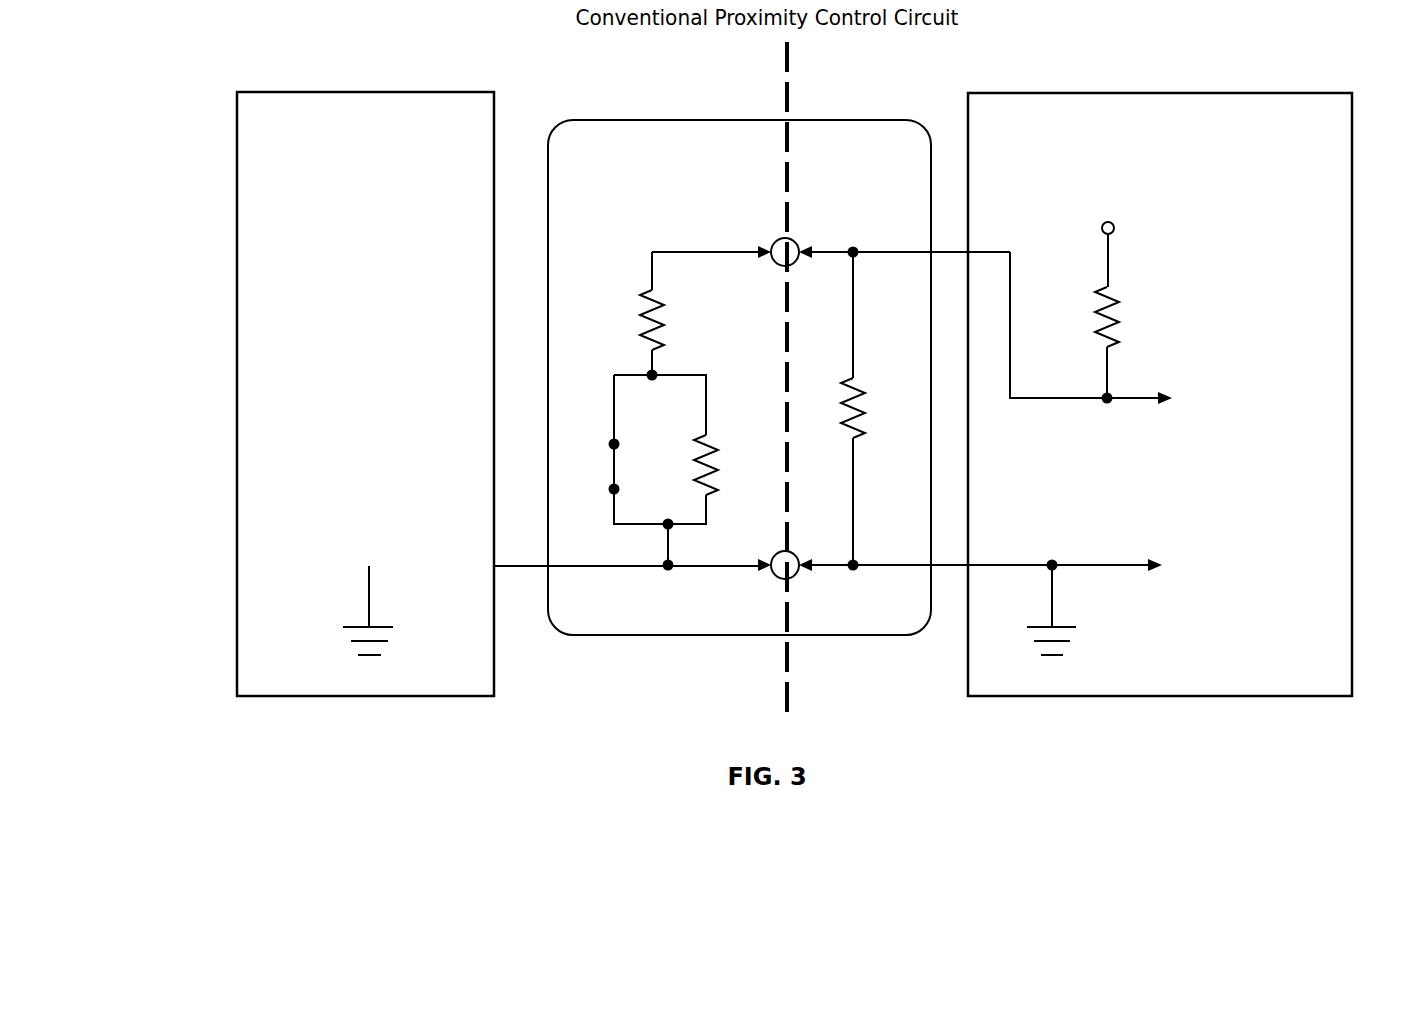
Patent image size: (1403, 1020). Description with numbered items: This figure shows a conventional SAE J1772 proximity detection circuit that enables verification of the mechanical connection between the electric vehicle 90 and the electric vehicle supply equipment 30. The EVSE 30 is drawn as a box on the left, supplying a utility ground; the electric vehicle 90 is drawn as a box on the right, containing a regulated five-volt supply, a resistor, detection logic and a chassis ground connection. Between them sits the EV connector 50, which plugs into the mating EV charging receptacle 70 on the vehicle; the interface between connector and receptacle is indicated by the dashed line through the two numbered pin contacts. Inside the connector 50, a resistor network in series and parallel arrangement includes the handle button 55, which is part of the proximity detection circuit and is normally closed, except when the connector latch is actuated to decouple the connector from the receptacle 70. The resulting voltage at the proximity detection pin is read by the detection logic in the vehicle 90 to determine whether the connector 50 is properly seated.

The electric vehicle supply equipment 30 is at (367, 92).
The EV connector 50 is at (673, 652).
The handle button 55 is at (614, 466).
The EV charging receptacle 70 is at (892, 648).
The electric vehicle 90 is at (1145, 93).